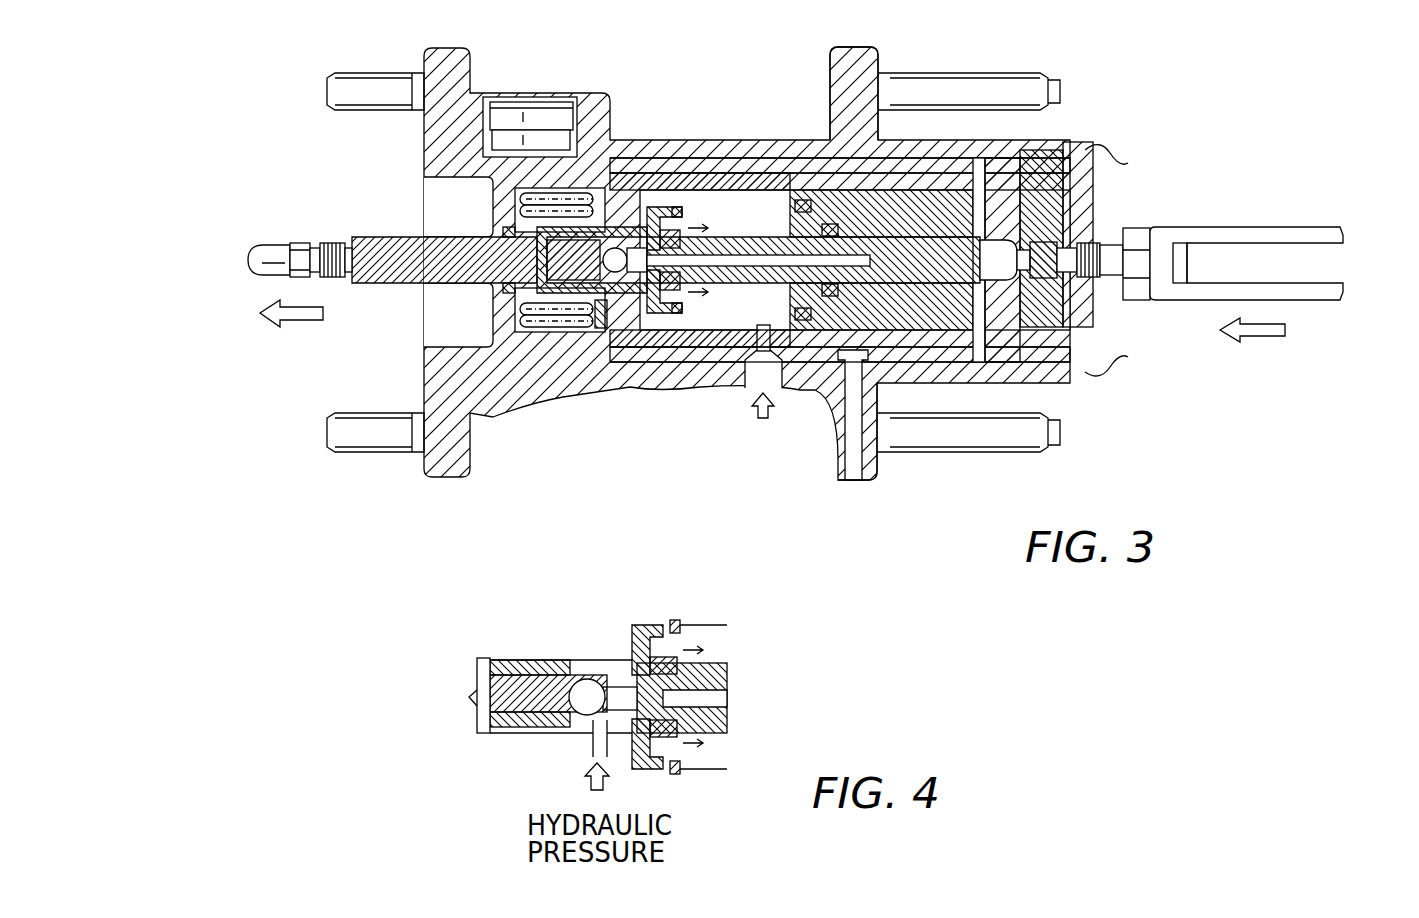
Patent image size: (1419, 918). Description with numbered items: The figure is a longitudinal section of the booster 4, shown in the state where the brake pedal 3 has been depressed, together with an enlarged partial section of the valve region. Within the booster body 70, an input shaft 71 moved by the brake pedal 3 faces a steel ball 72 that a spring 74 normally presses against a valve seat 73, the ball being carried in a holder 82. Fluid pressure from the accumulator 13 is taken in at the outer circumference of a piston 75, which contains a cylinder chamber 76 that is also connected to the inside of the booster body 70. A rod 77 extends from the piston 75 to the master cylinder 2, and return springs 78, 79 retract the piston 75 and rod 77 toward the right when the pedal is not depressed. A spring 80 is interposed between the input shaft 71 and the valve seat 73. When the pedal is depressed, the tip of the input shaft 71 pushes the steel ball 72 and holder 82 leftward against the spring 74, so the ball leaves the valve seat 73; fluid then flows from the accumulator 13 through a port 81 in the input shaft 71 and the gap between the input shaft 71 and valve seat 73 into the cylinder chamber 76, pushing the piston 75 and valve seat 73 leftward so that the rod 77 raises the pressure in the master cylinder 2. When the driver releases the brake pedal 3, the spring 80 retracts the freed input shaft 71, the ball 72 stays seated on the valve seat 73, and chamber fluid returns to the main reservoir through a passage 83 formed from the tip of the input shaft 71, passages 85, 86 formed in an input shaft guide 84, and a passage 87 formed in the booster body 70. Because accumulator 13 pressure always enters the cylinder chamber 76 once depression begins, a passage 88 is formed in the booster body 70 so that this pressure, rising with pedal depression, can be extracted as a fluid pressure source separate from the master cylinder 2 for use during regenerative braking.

In FIG. 3, the master cylinder 2 is at (221, 315).
In FIG. 3, the brake pedal 3 is at (1306, 340).
In FIG. 3, the booster 4 is at (758, 70).
In FIG. 3, the accumulator 13 is at (764, 464).
In FIG. 3, the booster body 70 is at (922, 147).
In FIG. 3, the input shaft 71 is at (1062, 242).
In FIG. 4, the input shaft 71 is at (715, 678).
In FIG. 3, the steel ball 72 is at (617, 248).
In FIG. 4, the steel ball 72 is at (587, 680).
In FIG. 3, the valve seat 73 is at (655, 207).
In FIG. 4, the valve seat 73 is at (635, 625).
In FIG. 3, the spring 74 is at (577, 230).
In FIG. 4, the spring 74 is at (530, 665).
In FIG. 3, the piston 75 is at (727, 195).
In FIG. 3, the cylinder chamber 76 is at (757, 218).
In FIG. 3, the rod 77 is at (403, 287).
In FIG. 4, the rod 77 is at (548, 693).
In FIG. 3, the return spring 78 is at (523, 190).
In FIG. 3, the return spring 79 is at (507, 197).
In FIG. 3, the spring 80 is at (688, 226).
In FIG. 4, the spring 80 is at (678, 657).
In FIG. 3, the port 81 is at (677, 207).
In FIG. 4, the port 81 is at (658, 620).
In FIG. 3, the holder 82 is at (562, 300).
In FIG. 4, the holder 82 is at (498, 662).
In FIG. 3, the passage 83 is at (732, 268).
In FIG. 4, the passage 83 is at (705, 692).
In FIG. 3, the input shaft guide 84 is at (883, 215).
In FIG. 3, the passage 85 is at (995, 200).
In FIG. 3, the passage 86 is at (1035, 165).
In FIG. 3, the passage 87 is at (862, 163).
In FIG. 3, the passage 88 is at (850, 462).